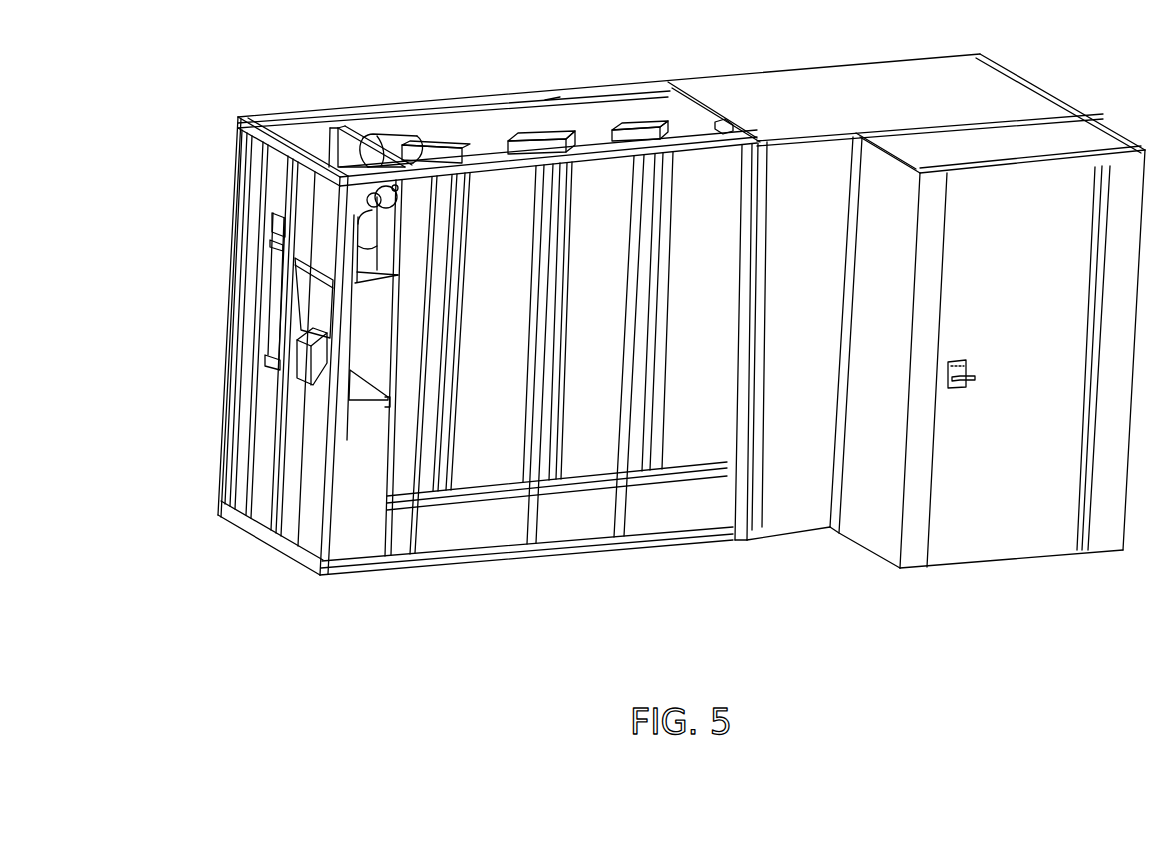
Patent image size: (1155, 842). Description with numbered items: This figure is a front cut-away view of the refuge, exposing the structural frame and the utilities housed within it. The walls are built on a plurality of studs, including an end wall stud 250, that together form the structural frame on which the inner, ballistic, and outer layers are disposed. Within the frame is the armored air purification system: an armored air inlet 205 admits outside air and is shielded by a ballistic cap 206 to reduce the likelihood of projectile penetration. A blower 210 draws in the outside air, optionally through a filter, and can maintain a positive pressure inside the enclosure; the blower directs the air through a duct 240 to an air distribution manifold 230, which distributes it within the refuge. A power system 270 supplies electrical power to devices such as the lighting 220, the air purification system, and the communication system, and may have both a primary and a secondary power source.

The armored air inlet 205 is at (370, 201).
The ballistic cap 206 is at (396, 198).
The blower 210 is at (383, 134).
The lighting 220 is at (447, 137).
The air distribution manifold 230 is at (546, 102).
The duct 240 is at (418, 140).
The end wall stud 250 is at (288, 528).
The power system 270 is at (379, 258).